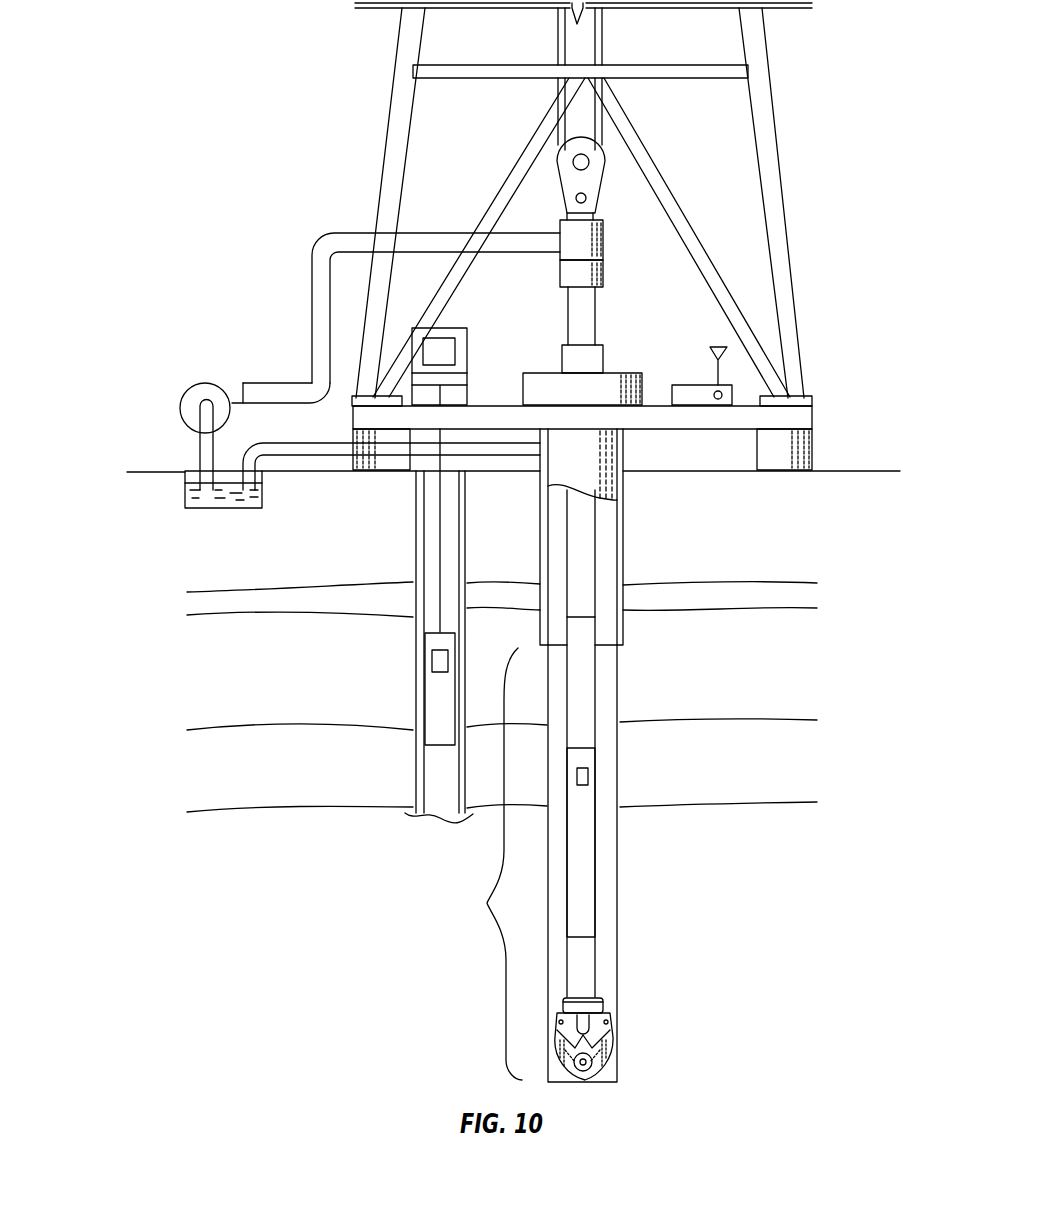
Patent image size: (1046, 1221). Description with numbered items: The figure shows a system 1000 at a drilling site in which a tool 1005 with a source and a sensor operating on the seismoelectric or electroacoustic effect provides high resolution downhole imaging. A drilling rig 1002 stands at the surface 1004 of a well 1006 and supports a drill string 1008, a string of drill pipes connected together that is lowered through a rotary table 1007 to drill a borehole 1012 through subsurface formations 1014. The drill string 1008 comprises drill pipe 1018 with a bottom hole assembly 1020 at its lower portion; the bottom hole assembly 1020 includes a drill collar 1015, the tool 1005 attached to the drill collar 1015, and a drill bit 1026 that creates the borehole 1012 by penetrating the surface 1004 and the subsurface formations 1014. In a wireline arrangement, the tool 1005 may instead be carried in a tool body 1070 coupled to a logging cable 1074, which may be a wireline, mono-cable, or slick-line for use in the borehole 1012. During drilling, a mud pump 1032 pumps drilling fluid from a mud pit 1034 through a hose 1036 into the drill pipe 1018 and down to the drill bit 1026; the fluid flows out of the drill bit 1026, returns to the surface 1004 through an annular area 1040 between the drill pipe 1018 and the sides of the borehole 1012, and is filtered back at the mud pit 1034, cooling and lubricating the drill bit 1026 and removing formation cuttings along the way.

The system 1000 is at (271, 40).
The drilling rig 1002 is at (780, 158).
The surface 1004 is at (836, 470).
The tool 1005 is at (588, 780).
The well 1006 is at (642, 466).
The rotary table 1007 is at (551, 373).
The drill string 1008 is at (601, 531).
The borehole 1012 is at (614, 578).
The subsurface formations 1014 is at (448, 679).
The drill collar 1015 is at (588, 758).
The drill pipe 1018 is at (590, 677).
The bottom hole assembly 1020 is at (477, 864).
The drill bit 1026 is at (612, 1034).
The mud pump 1032 is at (205, 383).
The mud pit 1034 is at (198, 482).
The hose 1036 is at (312, 298).
The annular area 1040 is at (603, 710).
The tool body 1070 is at (430, 690).
The logging cable 1074 is at (438, 557).